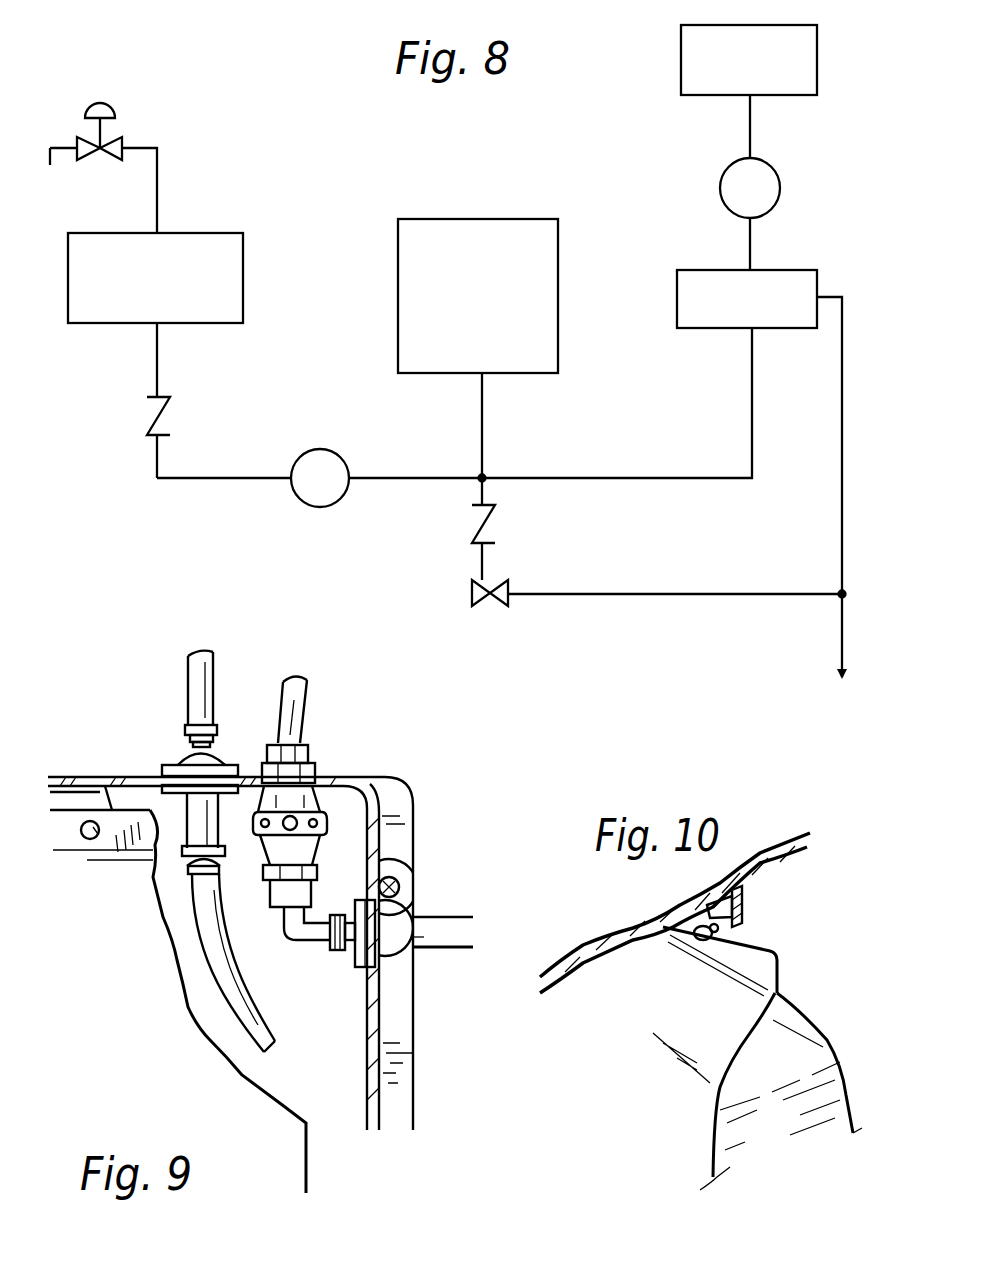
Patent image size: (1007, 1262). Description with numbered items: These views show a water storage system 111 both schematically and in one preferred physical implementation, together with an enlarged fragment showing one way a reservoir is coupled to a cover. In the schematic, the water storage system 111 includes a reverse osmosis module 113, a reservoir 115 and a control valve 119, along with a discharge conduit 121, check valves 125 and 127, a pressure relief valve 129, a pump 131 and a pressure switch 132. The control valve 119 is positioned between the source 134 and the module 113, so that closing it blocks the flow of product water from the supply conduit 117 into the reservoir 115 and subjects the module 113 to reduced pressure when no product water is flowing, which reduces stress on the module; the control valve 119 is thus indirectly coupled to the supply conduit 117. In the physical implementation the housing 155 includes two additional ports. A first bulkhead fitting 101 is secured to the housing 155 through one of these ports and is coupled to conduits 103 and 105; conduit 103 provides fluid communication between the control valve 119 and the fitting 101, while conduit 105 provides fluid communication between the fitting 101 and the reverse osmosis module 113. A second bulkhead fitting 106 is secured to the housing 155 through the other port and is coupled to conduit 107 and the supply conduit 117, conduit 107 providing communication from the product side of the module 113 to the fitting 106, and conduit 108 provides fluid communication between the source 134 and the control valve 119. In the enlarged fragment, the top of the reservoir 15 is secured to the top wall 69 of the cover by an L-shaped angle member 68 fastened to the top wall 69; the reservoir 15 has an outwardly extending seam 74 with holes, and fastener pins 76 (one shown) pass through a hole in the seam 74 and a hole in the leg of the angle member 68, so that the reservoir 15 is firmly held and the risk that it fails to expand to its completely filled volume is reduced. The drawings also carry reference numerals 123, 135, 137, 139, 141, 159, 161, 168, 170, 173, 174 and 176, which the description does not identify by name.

In FIG. 8, the water storage system 111 is at (340, 98).
In FIG. 8, the vent valve 123 is at (117, 112).
In FIG. 8, the pressure switch 132 is at (244, 266).
In FIG. 8, the check valve 127 is at (167, 426).
In FIG. 8, the pump 131 is at (306, 500).
In FIG. 8, the discharge conduit 121 is at (368, 478).
In FIG. 8, the reservoir 115 is at (476, 219).
In FIG. 9, the reservoir 115 is at (137, 997).
In FIG. 8, the conduit 139 is at (481, 440).
In FIG. 8, the junction 141 is at (484, 476).
In FIG. 8, the supply conduit 117 is at (751, 397).
In FIG. 9, the supply conduit 117 is at (233, 1010).
In FIG. 8, the reverse osmosis module 113 is at (677, 308).
In FIG. 8, the source 134 is at (681, 68).
In FIG. 8, the control valve 119 is at (720, 178).
In FIG. 9, the control valve 119 is at (270, 843).
In FIG. 8, the control line 135 is at (842, 478).
In FIG. 8, the check valve 125 is at (487, 517).
In FIG. 8, the pressure relief valve 129 is at (486, 597).
In FIG. 8, the drain line 137 is at (632, 594).
In FIG. 9, the mounting plate 168 is at (82, 790).
In FIG. 9, the housing 155 is at (412, 786).
In FIG. 9, the bracket wall 173 is at (378, 834).
In FIG. 9, the fastener 161 is at (400, 880).
In FIG. 9, the conduit 105 is at (445, 927).
In FIG. 9, the conduit 108 is at (305, 700).
In FIG. 9, the fitting nut 170 is at (312, 772).
In FIG. 9, the conduit 103 is at (303, 945).
In FIG. 9, the first bulkhead fitting 101 is at (376, 945).
In FIG. 9, the flow direction 159 is at (340, 1036).
In FIG. 9, the conduit 107 is at (190, 665).
In FIG. 9, the second bulkhead fitting 106 is at (178, 770).
In FIG. 9, the wall 174 is at (68, 838).
In FIG. 9, the wall 176 is at (102, 840).
In FIG. 10, the top wall 69 is at (718, 865).
In FIG. 10, the L-shaped angle member 68 is at (743, 913).
In FIG. 10, the seam 74 is at (757, 962).
In FIG. 10, the fastener pin 76 is at (700, 943).
In FIG. 10, the reservoir 15 is at (662, 1135).